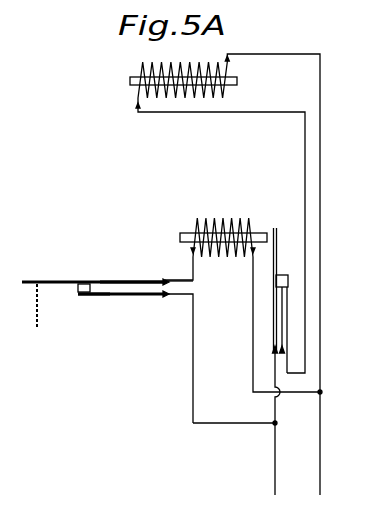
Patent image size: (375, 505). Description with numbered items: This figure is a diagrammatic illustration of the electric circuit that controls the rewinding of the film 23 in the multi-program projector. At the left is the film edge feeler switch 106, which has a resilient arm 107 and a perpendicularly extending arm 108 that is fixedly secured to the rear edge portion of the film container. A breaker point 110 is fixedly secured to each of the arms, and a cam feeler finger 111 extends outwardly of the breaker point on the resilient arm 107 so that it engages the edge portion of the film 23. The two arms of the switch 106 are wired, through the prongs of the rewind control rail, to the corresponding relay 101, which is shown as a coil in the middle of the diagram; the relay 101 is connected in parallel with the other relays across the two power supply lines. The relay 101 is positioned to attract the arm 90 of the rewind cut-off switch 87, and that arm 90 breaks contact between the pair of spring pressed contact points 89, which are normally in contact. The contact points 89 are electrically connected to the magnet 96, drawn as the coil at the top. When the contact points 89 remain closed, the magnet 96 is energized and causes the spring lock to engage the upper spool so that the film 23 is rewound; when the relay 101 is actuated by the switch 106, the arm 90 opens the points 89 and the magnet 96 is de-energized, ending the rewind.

The magnet 96 is at (202, 75).
The relay 101 is at (232, 232).
The arm 90 is at (276, 232).
The contact points 89 is at (280, 276).
The rewind cut-off switch 87 is at (285, 313).
The cam feeler finger 111 is at (30, 280).
The film edge feeler switch 106 is at (135, 281).
The resilient arm 107 is at (103, 280).
The perpendicularly extending arm 108 is at (115, 299).
The breaker point 110 is at (76, 294).
The film 23 is at (33, 308).